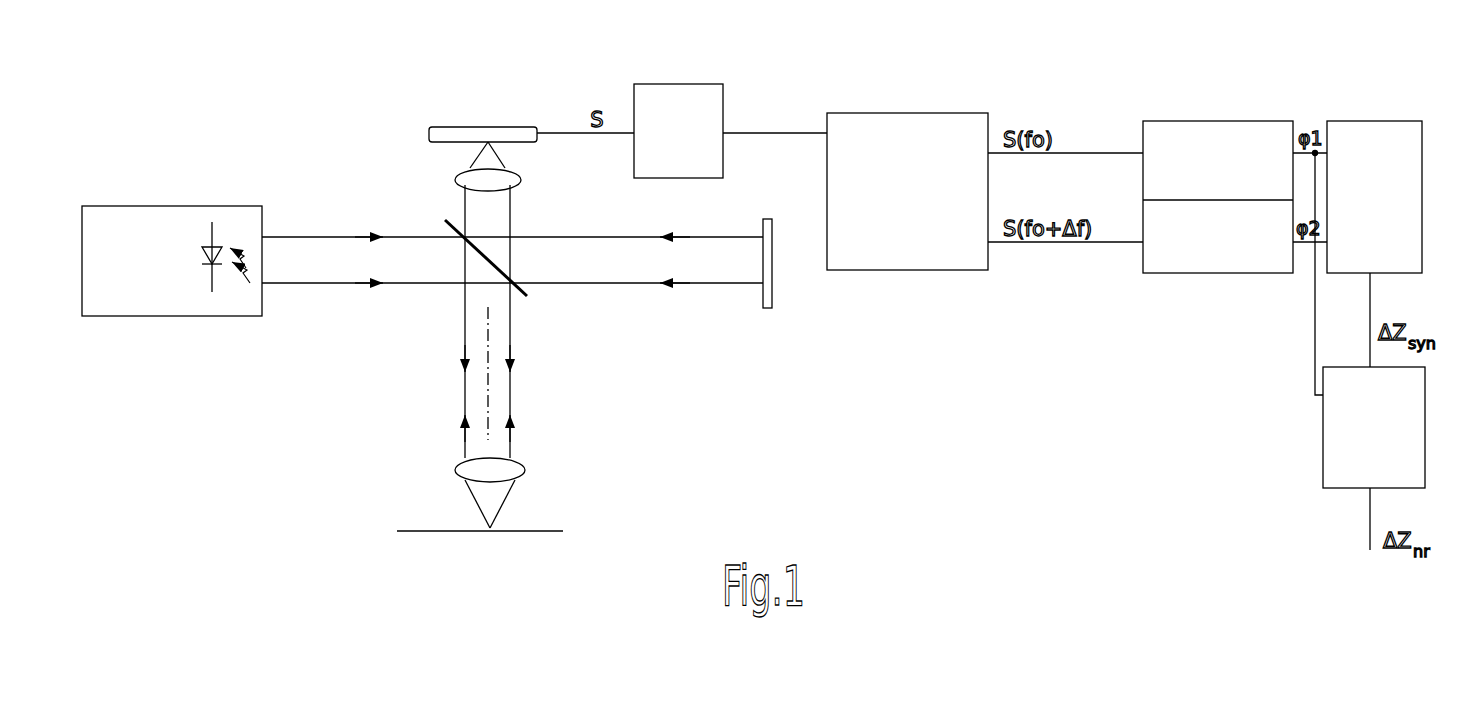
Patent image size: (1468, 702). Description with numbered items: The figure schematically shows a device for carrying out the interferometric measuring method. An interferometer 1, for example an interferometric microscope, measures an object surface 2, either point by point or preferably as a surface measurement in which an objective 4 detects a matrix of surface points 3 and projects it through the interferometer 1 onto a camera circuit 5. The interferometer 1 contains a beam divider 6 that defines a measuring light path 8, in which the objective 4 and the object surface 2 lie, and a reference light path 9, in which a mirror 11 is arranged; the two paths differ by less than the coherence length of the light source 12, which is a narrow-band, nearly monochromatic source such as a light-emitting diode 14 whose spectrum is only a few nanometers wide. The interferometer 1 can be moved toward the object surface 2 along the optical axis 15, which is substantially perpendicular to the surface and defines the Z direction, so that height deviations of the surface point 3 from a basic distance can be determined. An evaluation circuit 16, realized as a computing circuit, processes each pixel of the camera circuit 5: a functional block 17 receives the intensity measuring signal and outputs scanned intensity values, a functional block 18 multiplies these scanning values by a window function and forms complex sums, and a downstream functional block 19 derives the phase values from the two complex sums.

The interferometer 1 is at (395, 138).
The object surface 2 is at (552, 528).
The surface point 3 is at (490, 533).
The objective 4 is at (532, 465).
The camera circuit 5 is at (512, 126).
The beam divider 6 is at (452, 227).
The measuring light path 8 is at (452, 400).
The reference light path 9 is at (662, 308).
The mirror 11 is at (773, 300).
The light source 12 is at (296, 252).
The light-emitting diode 14 is at (200, 272).
The optical axis 15 is at (490, 318).
The evaluation circuit 16 is at (902, 337).
The functional block 17 is at (723, 155).
The functional block 18 is at (928, 210).
The functional block 19 is at (1195, 297).